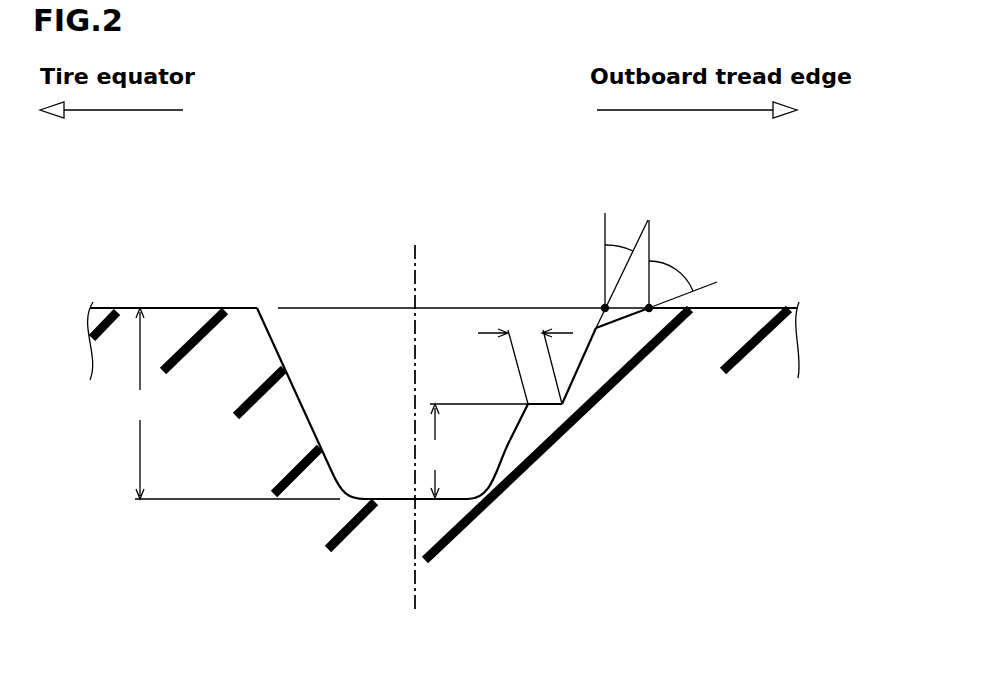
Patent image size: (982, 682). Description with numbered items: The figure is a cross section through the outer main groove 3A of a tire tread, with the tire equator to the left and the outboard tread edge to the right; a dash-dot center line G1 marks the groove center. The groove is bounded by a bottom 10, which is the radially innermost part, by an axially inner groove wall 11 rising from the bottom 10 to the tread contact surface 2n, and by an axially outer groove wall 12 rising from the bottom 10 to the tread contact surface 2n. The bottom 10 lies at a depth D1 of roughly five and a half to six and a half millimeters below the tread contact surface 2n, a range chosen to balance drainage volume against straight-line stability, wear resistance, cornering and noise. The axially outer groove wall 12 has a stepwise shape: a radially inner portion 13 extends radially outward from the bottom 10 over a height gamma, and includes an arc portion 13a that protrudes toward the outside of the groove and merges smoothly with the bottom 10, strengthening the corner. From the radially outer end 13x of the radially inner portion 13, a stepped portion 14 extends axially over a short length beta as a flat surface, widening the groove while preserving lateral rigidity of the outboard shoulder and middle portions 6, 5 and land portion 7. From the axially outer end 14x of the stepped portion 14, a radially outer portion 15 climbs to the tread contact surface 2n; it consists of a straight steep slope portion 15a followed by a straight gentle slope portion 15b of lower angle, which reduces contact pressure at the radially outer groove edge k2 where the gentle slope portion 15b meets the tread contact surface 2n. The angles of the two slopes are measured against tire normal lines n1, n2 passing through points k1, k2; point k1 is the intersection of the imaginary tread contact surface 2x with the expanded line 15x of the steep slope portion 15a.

The tread contact surface 2n is at (152, 308).
The imaginary tread contact surface 2x is at (517, 307).
The outer main groove 3A is at (500, 409).
The middle portion 5 is at (717, 305).
The outboard shoulder portion 6 is at (197, 306).
The crown land portion 7 is at (197, 306).
The bottom 10 is at (358, 498).
The axially inner groove wall 11 is at (304, 407).
The axially outer groove wall 12 is at (589, 495).
The radially inner portion 13 is at (507, 448).
The arc portion 13a is at (470, 495).
The radially outer end of the radially inner portion 13x is at (527, 403).
The stepped portion 14 is at (547, 404).
The axially outer end of the stepped portion 14x is at (562, 403).
The radially outer portion 15 is at (672, 470).
The steep slope portion 15a is at (626, 317).
The gentle slope portion 15b is at (650, 314).
The expanded line of the steep slope portion 15x is at (643, 228).
The point k1 is at (603, 306).
The radially outer groove edge k2 is at (650, 310).
The tire normal line n1 is at (605, 227).
The tire normal line n2 is at (652, 237).
The groove center line G1 is at (413, 289).
The depth D1 is at (232, 403).